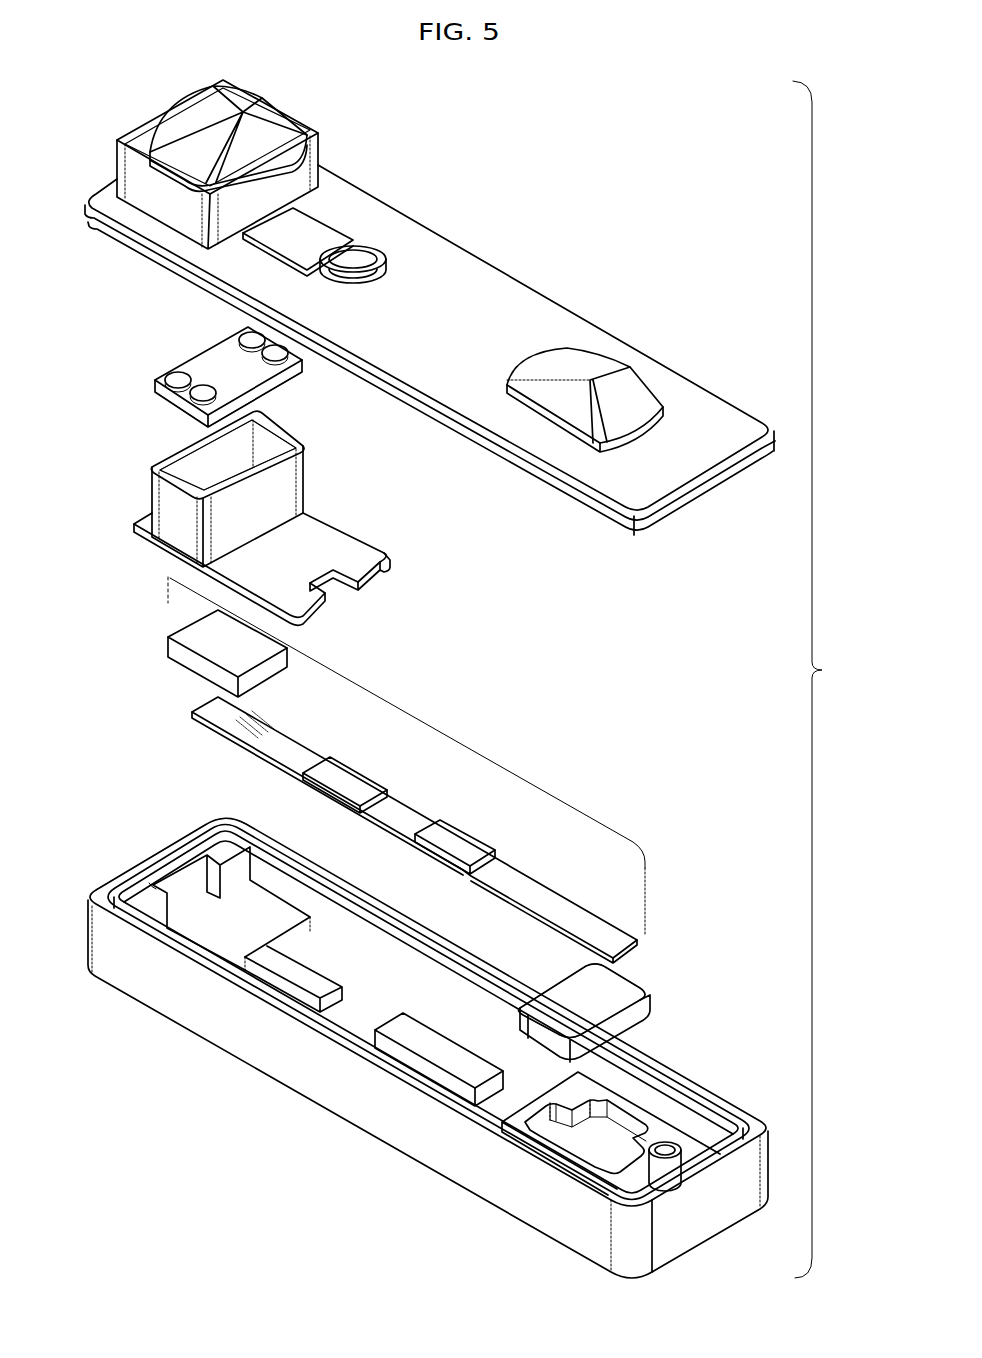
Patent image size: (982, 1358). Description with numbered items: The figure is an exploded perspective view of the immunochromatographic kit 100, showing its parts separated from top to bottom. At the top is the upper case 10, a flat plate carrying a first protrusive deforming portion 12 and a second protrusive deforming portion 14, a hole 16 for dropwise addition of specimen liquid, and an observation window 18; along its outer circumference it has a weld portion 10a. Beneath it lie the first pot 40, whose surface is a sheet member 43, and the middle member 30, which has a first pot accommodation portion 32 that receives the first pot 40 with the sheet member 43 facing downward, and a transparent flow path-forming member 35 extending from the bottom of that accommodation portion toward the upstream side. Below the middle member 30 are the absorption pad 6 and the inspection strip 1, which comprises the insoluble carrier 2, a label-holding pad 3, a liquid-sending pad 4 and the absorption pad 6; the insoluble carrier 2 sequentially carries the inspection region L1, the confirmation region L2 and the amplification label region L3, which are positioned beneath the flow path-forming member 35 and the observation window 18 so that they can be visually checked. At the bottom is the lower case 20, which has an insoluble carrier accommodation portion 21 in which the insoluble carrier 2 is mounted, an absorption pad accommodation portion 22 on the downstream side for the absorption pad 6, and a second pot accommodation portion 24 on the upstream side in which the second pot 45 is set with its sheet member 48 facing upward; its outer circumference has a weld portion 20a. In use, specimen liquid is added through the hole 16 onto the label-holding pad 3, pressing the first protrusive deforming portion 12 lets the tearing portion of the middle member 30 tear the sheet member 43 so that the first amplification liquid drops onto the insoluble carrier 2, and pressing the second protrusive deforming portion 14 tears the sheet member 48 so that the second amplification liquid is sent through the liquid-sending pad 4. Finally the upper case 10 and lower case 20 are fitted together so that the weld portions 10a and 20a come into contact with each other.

The inspection strip 1 is at (457, 742).
The insoluble carrier 2 is at (404, 812).
The label-holding pad 3 is at (355, 778).
The liquid-sending pad 4 is at (462, 846).
The absorption pad 6 is at (193, 628).
The upper case 10 is at (452, 258).
The weld portion 10a is at (113, 240).
The first protrusive deforming portion 12 is at (262, 103).
The second protrusive deforming portion 14 is at (593, 360).
The hole 16 is at (372, 244).
The observation window 18 is at (313, 250).
The lower case 20 is at (752, 1180).
The weld portion 20a is at (118, 882).
The insoluble carrier accommodation portion 21 is at (480, 1052).
The absorption pad accommodation portion 22 is at (250, 917).
The second pot accommodation portion 24 is at (607, 1140).
The middle member 30 is at (225, 476).
The first pot accommodation portion 32 is at (285, 440).
The flow path-forming member 35 is at (340, 540).
The first pot 40 is at (205, 360).
The sheet member 43 is at (176, 408).
The second pot 45 is at (619, 1001).
The sheet member 48 is at (632, 993).
The immunochromatographic kit 100 is at (832, 679).
The inspection region L1 is at (270, 740).
The confirmation region L2 is at (253, 730).
The amplification label region L3 is at (245, 717).